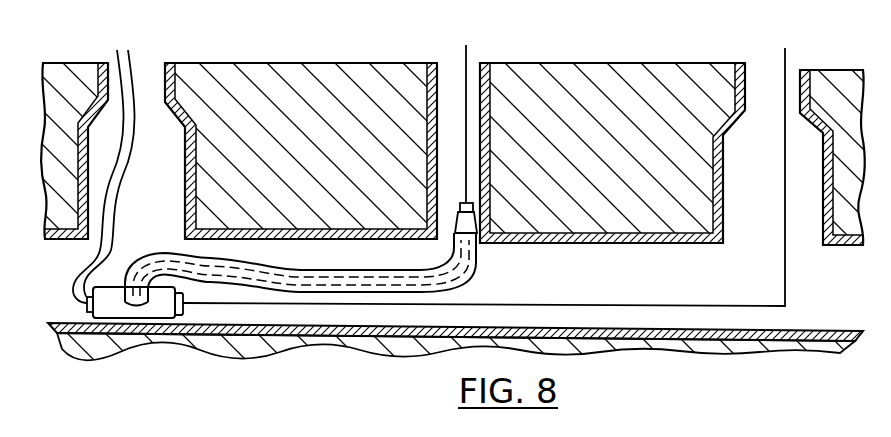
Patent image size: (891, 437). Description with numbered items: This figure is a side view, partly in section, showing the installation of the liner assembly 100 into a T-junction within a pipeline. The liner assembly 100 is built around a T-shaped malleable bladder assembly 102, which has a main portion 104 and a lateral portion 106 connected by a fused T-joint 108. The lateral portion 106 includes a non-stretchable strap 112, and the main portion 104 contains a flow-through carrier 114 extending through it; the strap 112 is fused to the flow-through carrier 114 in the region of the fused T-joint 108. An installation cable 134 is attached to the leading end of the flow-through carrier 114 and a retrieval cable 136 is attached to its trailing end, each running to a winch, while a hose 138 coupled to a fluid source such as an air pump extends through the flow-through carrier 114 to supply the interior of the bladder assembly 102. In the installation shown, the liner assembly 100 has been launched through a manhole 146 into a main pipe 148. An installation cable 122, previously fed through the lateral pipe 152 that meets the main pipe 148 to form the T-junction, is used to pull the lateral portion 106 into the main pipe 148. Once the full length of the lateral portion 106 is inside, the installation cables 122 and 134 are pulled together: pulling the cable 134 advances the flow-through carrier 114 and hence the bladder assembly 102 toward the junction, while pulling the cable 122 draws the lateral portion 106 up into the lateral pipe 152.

The liner assembly 100 is at (300, 265).
The T-shaped malleable bladder assembly 102 is at (156, 327).
The main portion 104 is at (90, 316).
The lateral portion 106 is at (412, 268).
The fused T-joint 108 is at (130, 292).
The non-stretchable strap 112 is at (478, 255).
The flow-through carrier 114 is at (187, 306).
The installation cable 122 is at (468, 63).
The installation cable 134 is at (788, 66).
The retrieval cable 136 is at (110, 62).
The hose 138 is at (124, 58).
The manhole 146 is at (157, 70).
The main pipe 148 is at (838, 330).
The lateral pipe 152 is at (440, 87).